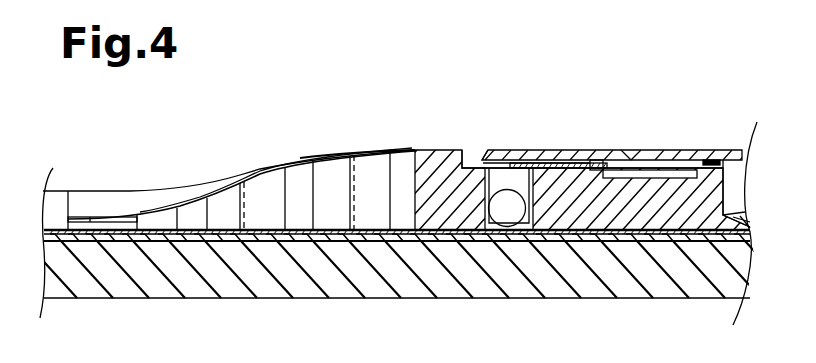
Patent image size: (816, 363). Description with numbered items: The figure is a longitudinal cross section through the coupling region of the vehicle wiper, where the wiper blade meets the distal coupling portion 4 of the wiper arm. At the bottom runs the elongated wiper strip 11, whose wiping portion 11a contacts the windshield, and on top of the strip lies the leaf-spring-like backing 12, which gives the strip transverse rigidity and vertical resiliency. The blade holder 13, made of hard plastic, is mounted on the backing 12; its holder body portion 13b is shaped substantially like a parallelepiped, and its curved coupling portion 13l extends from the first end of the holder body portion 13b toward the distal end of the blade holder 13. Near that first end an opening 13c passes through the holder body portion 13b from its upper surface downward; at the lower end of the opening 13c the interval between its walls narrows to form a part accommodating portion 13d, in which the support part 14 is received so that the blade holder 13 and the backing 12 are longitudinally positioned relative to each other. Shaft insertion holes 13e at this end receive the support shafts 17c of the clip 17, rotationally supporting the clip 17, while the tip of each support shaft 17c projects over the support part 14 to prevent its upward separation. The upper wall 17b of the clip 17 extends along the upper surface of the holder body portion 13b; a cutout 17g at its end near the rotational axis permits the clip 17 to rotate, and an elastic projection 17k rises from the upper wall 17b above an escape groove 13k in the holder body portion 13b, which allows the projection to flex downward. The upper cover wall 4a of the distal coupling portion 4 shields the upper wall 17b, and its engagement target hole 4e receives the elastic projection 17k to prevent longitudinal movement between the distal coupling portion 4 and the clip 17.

The distal coupling portion 4 is at (725, 150).
The upper cover wall 4a is at (547, 162).
The engagement target hole 4e is at (600, 160).
The wiper strip 11 is at (203, 290).
The wiping portion 11a is at (377, 298).
The backing 12 is at (290, 242).
The blade holder 13 is at (428, 148).
The holder body portion 13b is at (567, 158).
The opening 13c is at (482, 160).
The part accommodating portion 13d is at (517, 232).
The shaft insertion hole 13e is at (500, 192).
The escape groove 13k is at (628, 150).
The curved coupling portion 13l is at (143, 207).
The support part 14 is at (506, 227).
The clip 17 is at (692, 150).
The upper wall 17b is at (657, 166).
The support shaft 17c is at (488, 223).
The cutout 17g is at (512, 162).
The elastic projection 17k is at (634, 157).